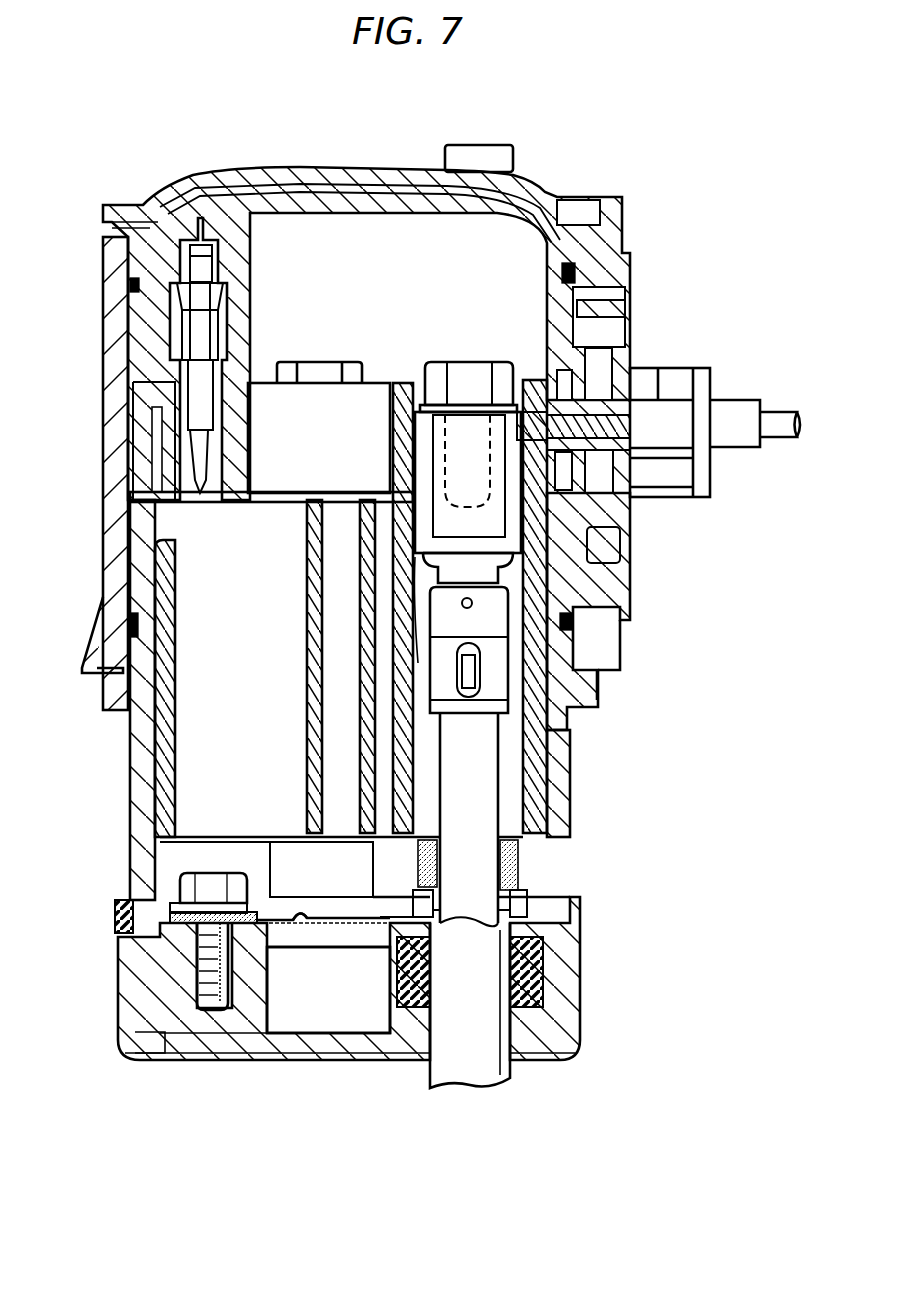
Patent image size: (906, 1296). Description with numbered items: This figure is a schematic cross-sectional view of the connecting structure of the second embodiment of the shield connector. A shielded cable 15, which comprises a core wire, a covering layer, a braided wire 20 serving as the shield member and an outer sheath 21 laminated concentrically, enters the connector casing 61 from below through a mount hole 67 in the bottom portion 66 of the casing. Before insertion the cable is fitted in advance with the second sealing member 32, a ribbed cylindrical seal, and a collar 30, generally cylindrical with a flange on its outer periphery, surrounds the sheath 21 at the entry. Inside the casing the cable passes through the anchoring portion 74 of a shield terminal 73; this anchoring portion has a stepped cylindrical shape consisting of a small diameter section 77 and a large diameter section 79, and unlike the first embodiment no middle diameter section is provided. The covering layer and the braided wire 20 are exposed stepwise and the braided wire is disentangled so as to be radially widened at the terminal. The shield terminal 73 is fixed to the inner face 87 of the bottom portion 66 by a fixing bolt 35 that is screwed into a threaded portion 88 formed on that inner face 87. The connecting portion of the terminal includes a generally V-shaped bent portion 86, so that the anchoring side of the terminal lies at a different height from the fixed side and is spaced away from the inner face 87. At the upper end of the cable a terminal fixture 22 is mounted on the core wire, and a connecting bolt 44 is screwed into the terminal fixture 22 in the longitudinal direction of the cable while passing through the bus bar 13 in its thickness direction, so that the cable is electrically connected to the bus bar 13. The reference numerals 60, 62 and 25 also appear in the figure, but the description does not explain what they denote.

The fuel injector assembly 60 is at (672, 147).
The bus bar 13 is at (528, 420).
The connecting bolt 44 is at (462, 372).
The terminal fixture 22 is at (425, 478).
The inner housing wall 62 is at (162, 732).
The connector casing 61 is at (130, 858).
The fixing bolt 35 is at (205, 887).
The shield terminal 73 is at (292, 857).
The bent portion 86 is at (307, 912).
The inner face 87 is at (348, 922).
The threaded portion 88 is at (200, 958).
The bottom portion 66 is at (292, 940).
The housing bottom 25 is at (243, 1000).
The shielded cable 15 is at (460, 1060).
The sheath 21 is at (493, 1055).
The mount hole 67 is at (530, 1020).
The braided wire 20 is at (478, 900).
The second sealing member 32 is at (550, 975).
The collar 30 is at (527, 848).
The anchoring portion 74 is at (550, 869).
The small diameter section 77 is at (530, 866).
The large diameter section 79 is at (528, 905).